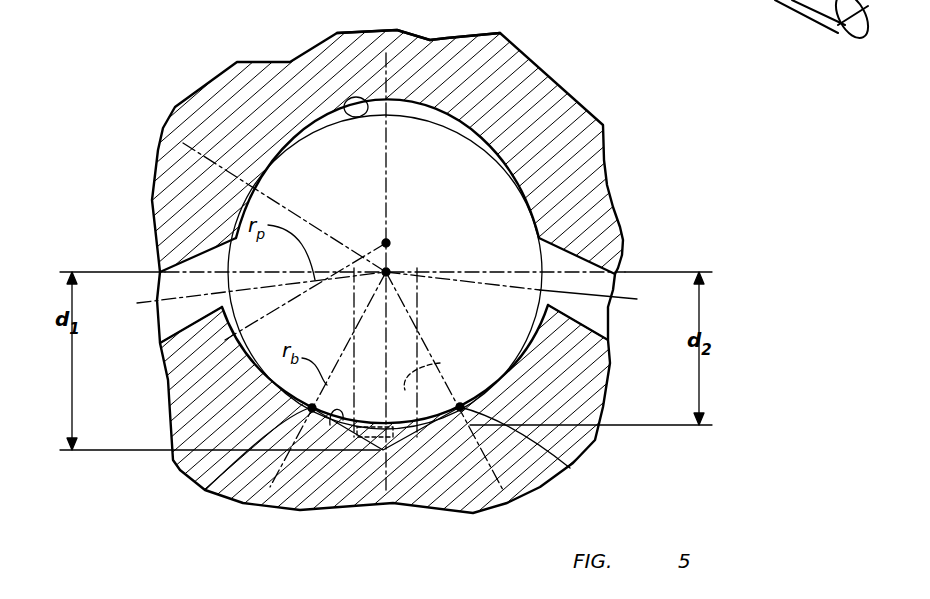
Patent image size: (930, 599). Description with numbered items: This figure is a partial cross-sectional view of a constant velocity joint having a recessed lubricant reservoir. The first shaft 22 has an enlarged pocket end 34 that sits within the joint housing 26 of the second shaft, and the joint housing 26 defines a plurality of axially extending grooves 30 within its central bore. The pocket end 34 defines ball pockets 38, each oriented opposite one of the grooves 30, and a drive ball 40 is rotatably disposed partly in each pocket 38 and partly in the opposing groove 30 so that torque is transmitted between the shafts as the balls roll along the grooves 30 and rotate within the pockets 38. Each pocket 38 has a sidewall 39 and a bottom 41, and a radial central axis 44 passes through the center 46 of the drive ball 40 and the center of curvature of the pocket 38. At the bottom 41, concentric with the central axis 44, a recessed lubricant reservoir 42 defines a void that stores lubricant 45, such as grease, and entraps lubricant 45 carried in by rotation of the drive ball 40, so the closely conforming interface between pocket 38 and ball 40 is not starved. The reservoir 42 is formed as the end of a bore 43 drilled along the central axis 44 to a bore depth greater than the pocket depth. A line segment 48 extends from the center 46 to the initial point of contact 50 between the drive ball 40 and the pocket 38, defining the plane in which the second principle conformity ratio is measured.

The first shaft 22 is at (198, 413).
The joint housing 26 is at (213, 110).
The grooves 30 is at (384, 30).
The pocket end 34 is at (565, 390).
The pockets 38 is at (525, 292).
The sidewall 39 is at (246, 294).
The drive balls 40 is at (497, 228).
The bottom 41 is at (312, 410).
The recessed lubricant reservoir 42 is at (221, 342).
The bores 43 is at (440, 363).
The central axis 44 is at (378, 165).
The lubricant 45 is at (380, 437).
The center 46 is at (388, 270).
The line segment 48 is at (328, 382).
The initial point of contact 50 is at (204, 491).